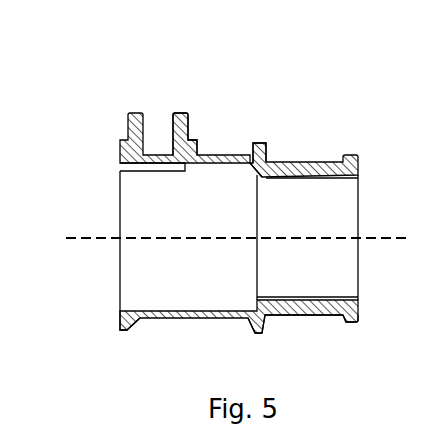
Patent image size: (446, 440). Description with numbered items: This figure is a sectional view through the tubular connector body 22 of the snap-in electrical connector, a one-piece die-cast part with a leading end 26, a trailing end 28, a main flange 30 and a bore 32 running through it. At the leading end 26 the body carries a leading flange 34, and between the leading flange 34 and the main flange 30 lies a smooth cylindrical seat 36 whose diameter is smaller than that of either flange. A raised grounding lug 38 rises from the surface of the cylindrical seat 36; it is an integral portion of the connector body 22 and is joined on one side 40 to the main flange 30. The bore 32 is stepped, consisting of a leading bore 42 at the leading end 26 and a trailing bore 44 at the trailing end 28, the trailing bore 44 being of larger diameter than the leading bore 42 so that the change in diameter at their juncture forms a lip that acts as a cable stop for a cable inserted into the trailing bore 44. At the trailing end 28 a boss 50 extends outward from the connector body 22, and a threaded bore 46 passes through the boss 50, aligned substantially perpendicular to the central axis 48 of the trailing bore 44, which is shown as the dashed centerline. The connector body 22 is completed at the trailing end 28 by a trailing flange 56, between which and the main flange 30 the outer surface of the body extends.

The tubular connector body 22 is at (97, 106).
The leading end 26 is at (360, 230).
The trailing end 28 is at (118, 193).
The main flange 30 is at (263, 143).
The bore 32 is at (333, 253).
The leading flange 34 is at (350, 324).
The cylindrical seat 36 is at (310, 162).
The raised grounding lug 38 is at (278, 320).
The side of the grounding lug 40 is at (262, 333).
The leading bore 42 is at (299, 234).
The trailing bore 44 is at (176, 263).
The threaded bore 46 is at (156, 127).
The central axis 48 is at (94, 238).
The boss 50 is at (190, 126).
The trailing flange 56 is at (255, 172).